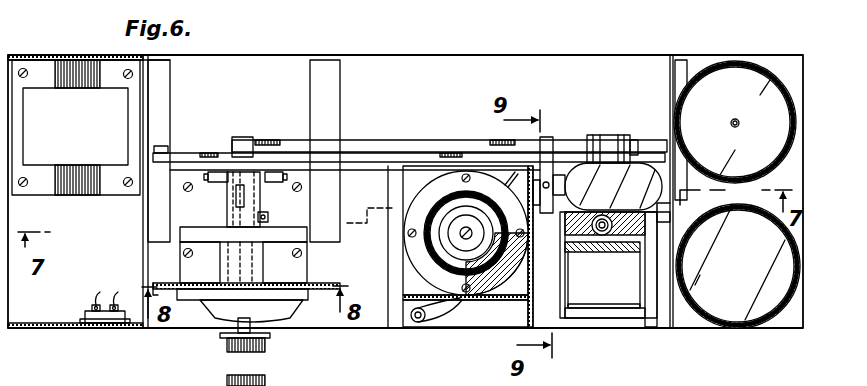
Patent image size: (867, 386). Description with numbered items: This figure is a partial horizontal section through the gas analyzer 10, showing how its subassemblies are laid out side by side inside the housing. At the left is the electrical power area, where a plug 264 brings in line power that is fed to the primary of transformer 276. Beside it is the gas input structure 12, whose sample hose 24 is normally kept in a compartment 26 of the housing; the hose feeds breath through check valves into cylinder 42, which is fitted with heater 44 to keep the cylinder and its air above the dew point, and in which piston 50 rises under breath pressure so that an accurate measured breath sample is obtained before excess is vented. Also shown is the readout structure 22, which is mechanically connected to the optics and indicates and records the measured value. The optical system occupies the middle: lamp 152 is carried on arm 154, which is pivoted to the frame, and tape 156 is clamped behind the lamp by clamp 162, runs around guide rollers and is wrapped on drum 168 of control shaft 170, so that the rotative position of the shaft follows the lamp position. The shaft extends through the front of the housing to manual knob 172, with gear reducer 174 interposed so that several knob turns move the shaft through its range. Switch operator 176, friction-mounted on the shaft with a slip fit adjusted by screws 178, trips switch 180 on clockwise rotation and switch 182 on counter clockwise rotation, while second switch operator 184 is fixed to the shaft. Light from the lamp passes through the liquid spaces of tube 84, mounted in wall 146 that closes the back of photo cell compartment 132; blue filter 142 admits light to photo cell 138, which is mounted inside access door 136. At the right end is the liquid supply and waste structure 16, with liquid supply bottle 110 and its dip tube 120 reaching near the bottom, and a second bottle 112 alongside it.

The gas analyzer 10 is at (472, 50).
The gas input structure 12 is at (460, 327).
The liquid supply and waste structure 16 is at (732, 330).
The readout structure 22 is at (302, 318).
The sample hose 24 is at (422, 325).
The compartment 26 is at (475, 313).
The cylinder 42 is at (437, 222).
The heater 44 is at (488, 268).
The piston 50 is at (430, 246).
The tube 84 is at (603, 237).
The liquid supply bottle 110 is at (768, 72).
The take-up reel 112 is at (767, 307).
The dip tube 120 is at (738, 119).
The photo electric cell compartment 132 is at (620, 298).
The access door 136 is at (602, 318).
The photo cell 138 is at (613, 318).
The blue filter 142 is at (603, 252).
The wall 146 is at (647, 222).
The lamp 152 is at (638, 173).
The arm 154 is at (412, 160).
The tape 156 is at (165, 148).
The clamp 162 is at (612, 135).
The drum 168 is at (248, 137).
The control shaft 170 is at (243, 328).
The manual knob 172 is at (257, 343).
The gear reducer 174 is at (218, 313).
The switch operator 176 is at (255, 199).
The screws 178 is at (266, 218).
The switch 180 is at (222, 180).
The switch 182 is at (270, 176).
The second switch operator 184 is at (255, 270).
The plug 264 is at (85, 313).
The transformer 276 is at (75, 198).